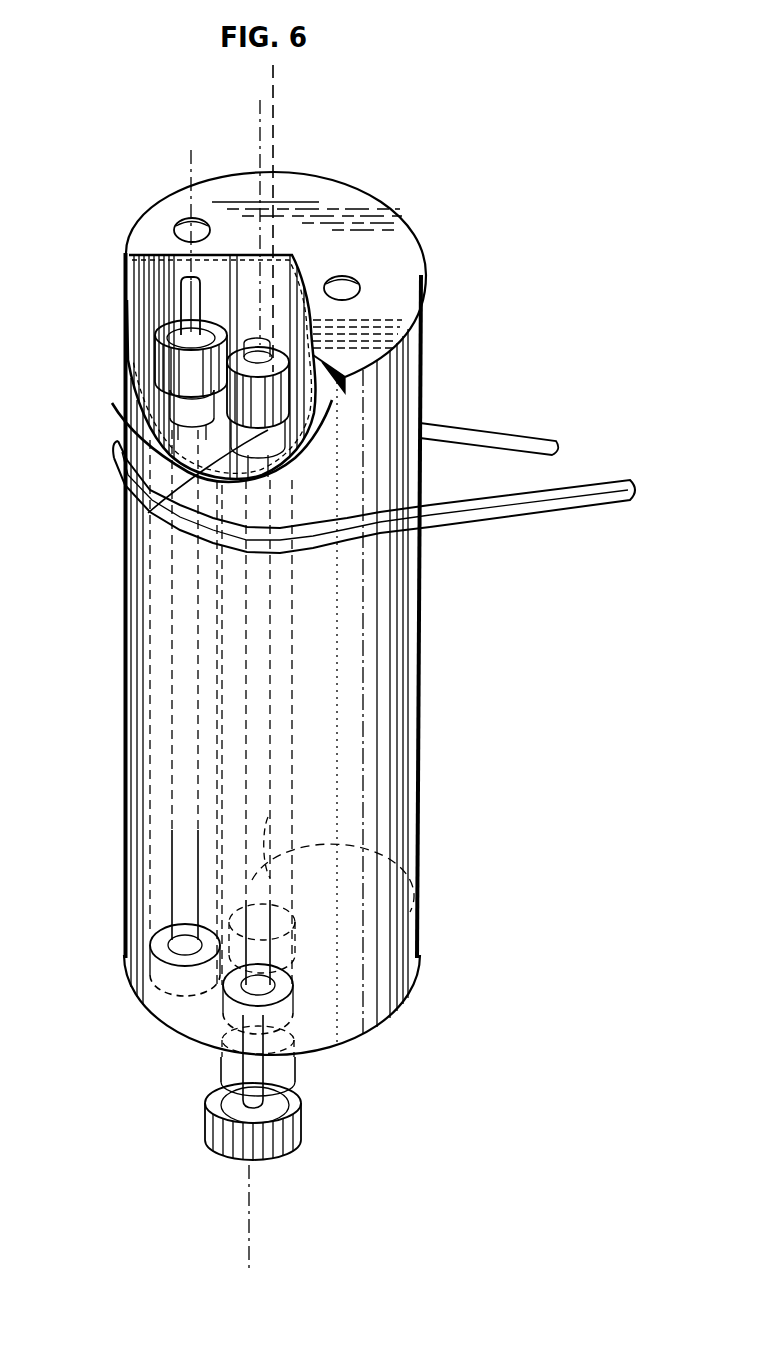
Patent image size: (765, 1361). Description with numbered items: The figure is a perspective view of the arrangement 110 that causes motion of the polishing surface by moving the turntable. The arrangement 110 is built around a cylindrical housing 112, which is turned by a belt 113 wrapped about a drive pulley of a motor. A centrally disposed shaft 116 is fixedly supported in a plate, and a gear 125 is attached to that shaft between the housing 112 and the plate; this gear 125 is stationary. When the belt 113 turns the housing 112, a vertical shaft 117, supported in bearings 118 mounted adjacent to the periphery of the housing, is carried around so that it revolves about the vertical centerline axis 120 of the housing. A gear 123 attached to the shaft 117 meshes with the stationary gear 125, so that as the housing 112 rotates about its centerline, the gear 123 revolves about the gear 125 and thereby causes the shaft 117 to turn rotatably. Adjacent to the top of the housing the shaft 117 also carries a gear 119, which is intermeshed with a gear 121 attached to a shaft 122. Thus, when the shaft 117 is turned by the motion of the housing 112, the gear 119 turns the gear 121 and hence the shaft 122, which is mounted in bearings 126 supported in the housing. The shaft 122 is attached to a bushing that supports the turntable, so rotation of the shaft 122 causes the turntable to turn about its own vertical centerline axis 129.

The arrangement 110 is at (497, 775).
The cylindrical housing 112 is at (420, 815).
The belt 113 is at (538, 510).
The centrally disposed shaft 116 is at (273, 897).
The vertical shaft 117 is at (257, 703).
The bearings 118 is at (266, 432).
The gear 119 is at (152, 510).
The vertical centerline axis 120 is at (273, 139).
The gear 121 is at (157, 338).
The shaft 122 is at (180, 288).
The gear 123 is at (300, 1125).
The gear 125 is at (300, 1065).
The bearings 126 is at (168, 400).
The vertical centerline axis 129 is at (191, 180).